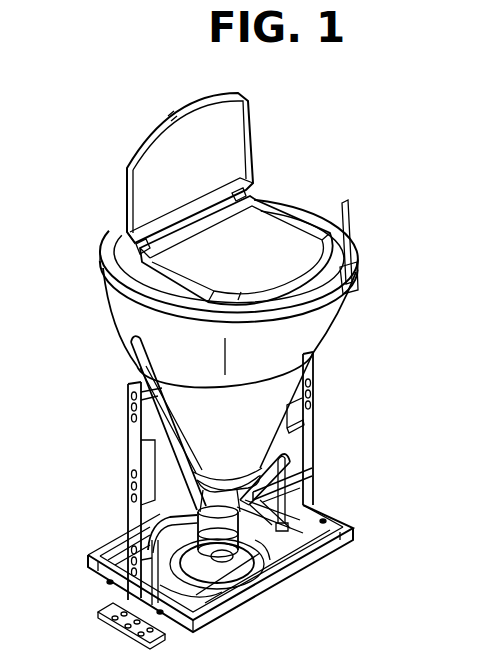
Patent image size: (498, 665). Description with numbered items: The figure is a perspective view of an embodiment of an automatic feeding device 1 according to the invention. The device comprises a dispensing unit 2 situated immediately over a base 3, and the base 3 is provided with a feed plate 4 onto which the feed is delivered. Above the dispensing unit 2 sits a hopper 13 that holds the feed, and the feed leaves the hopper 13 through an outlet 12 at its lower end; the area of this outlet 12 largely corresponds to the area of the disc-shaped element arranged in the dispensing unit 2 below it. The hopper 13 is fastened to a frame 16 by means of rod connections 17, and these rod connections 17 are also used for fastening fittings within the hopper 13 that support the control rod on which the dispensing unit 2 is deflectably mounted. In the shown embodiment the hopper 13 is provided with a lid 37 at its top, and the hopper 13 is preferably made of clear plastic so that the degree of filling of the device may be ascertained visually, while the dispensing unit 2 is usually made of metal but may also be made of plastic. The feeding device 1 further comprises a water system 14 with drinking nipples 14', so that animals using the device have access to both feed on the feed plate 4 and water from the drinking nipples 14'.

The automatic feeding device 1 is at (335, 392).
The dispensing unit 2 is at (88, 560).
The base 3 is at (348, 510).
The feed plate 4 is at (280, 560).
The outlet 12 is at (268, 545).
The hopper 13 is at (291, 207).
The water system 14 is at (148, 423).
The drinking nipples 14' is at (312, 479).
The frame 16 is at (318, 418).
The rod connections 17 is at (132, 405).
The lid 37 is at (240, 94).